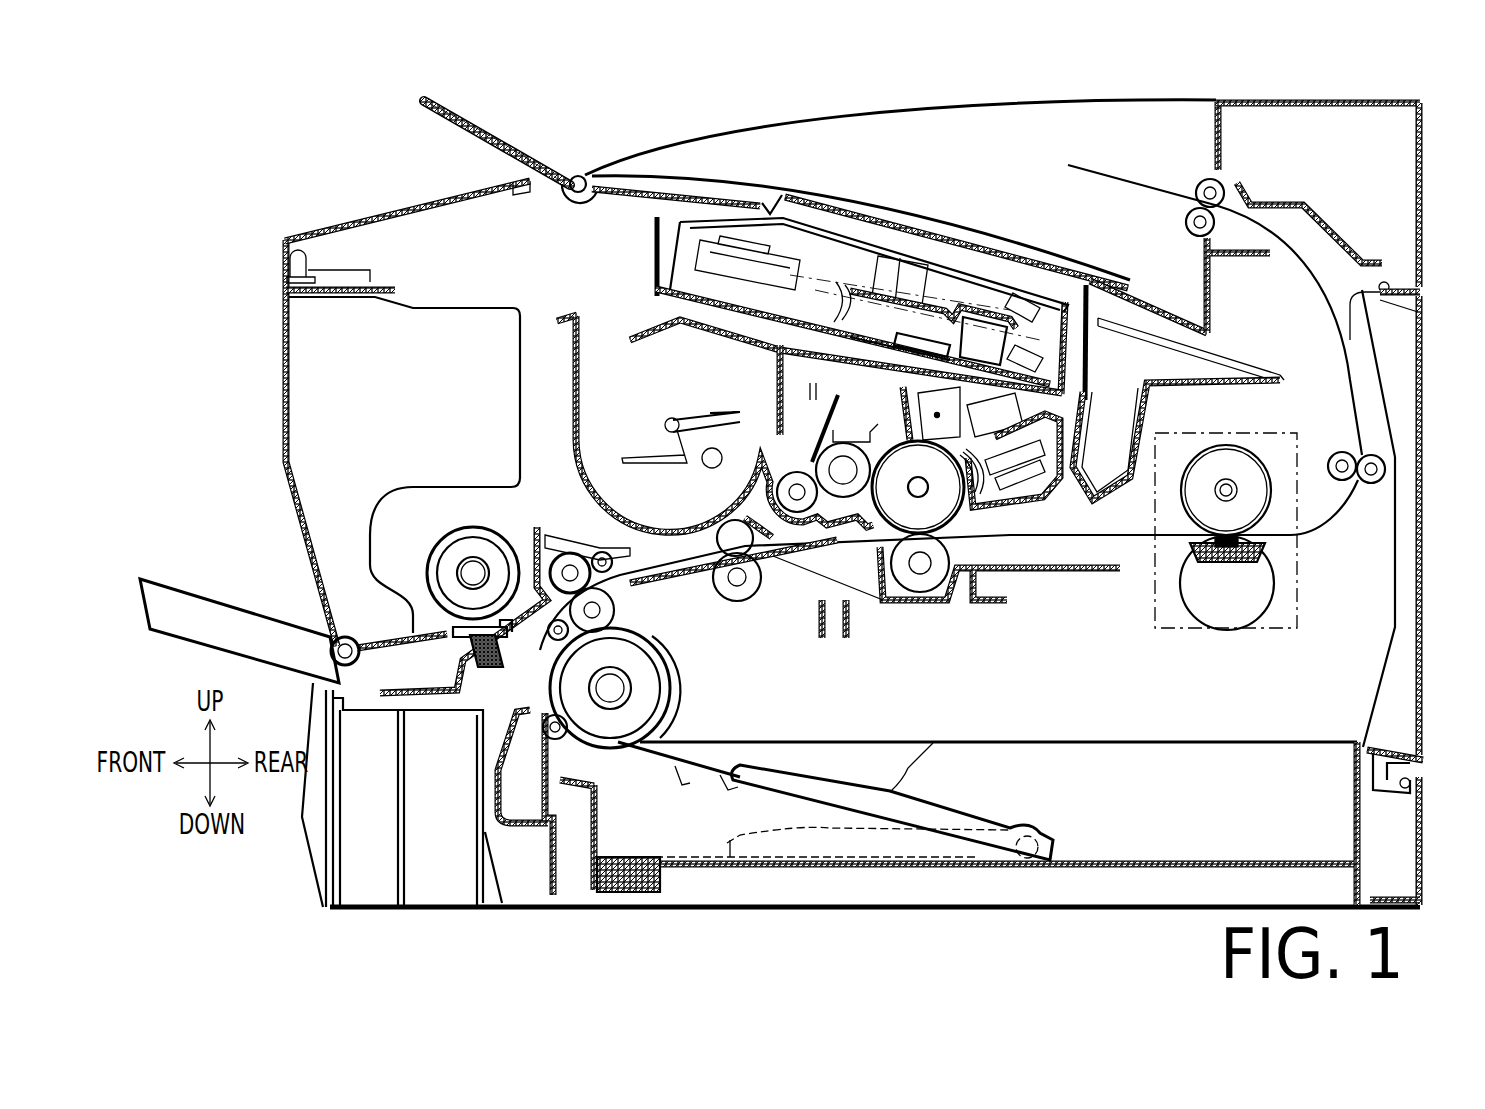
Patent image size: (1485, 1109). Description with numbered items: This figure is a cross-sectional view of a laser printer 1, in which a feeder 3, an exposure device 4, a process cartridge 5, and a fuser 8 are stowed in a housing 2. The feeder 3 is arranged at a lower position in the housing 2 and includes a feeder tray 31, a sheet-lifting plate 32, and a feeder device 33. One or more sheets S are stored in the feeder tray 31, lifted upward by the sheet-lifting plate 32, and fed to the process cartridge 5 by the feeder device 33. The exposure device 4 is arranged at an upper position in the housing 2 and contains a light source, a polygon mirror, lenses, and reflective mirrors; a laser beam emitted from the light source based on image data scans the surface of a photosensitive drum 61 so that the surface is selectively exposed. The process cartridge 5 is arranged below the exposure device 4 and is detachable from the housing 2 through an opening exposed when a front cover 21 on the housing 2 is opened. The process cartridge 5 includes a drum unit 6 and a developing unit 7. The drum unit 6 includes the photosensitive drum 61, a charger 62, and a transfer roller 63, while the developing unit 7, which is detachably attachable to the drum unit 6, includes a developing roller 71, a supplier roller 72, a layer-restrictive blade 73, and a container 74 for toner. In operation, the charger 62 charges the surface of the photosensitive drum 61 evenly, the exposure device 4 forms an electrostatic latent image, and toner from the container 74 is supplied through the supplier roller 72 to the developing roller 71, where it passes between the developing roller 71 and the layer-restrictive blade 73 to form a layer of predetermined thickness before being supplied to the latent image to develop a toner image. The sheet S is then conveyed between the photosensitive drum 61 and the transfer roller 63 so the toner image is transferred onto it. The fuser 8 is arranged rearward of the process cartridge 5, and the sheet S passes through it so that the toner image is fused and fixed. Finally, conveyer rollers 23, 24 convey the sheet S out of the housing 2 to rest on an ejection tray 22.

The laser printer 1 is at (265, 126).
The housing 2 is at (393, 206).
The front cover 21 is at (278, 366).
The ejection tray 22 is at (1010, 245).
The conveyer roller 23 is at (1370, 485).
The conveyer roller 24 is at (1188, 200).
The feeder 3 is at (1006, 597).
The feeder tray 31 is at (1360, 820).
The sheet-lifting plate 32 is at (937, 795).
The feeder device 33 is at (683, 662).
The exposure device 4 is at (943, 248).
The process cartridge 5 is at (611, 283).
The drum unit 6 is at (1076, 458).
The photosensitive drum 61 is at (973, 510).
The charger 62 is at (918, 487).
The transfer roller 63 is at (907, 580).
The developing unit 7 is at (709, 386).
The developing roller 71 is at (833, 460).
The supplier roller 72 is at (797, 470).
The layer-restrictive blade 73 is at (808, 462).
The container 74 is at (630, 393).
The fuser 8 is at (1305, 419).
The sheet S is at (1090, 170).